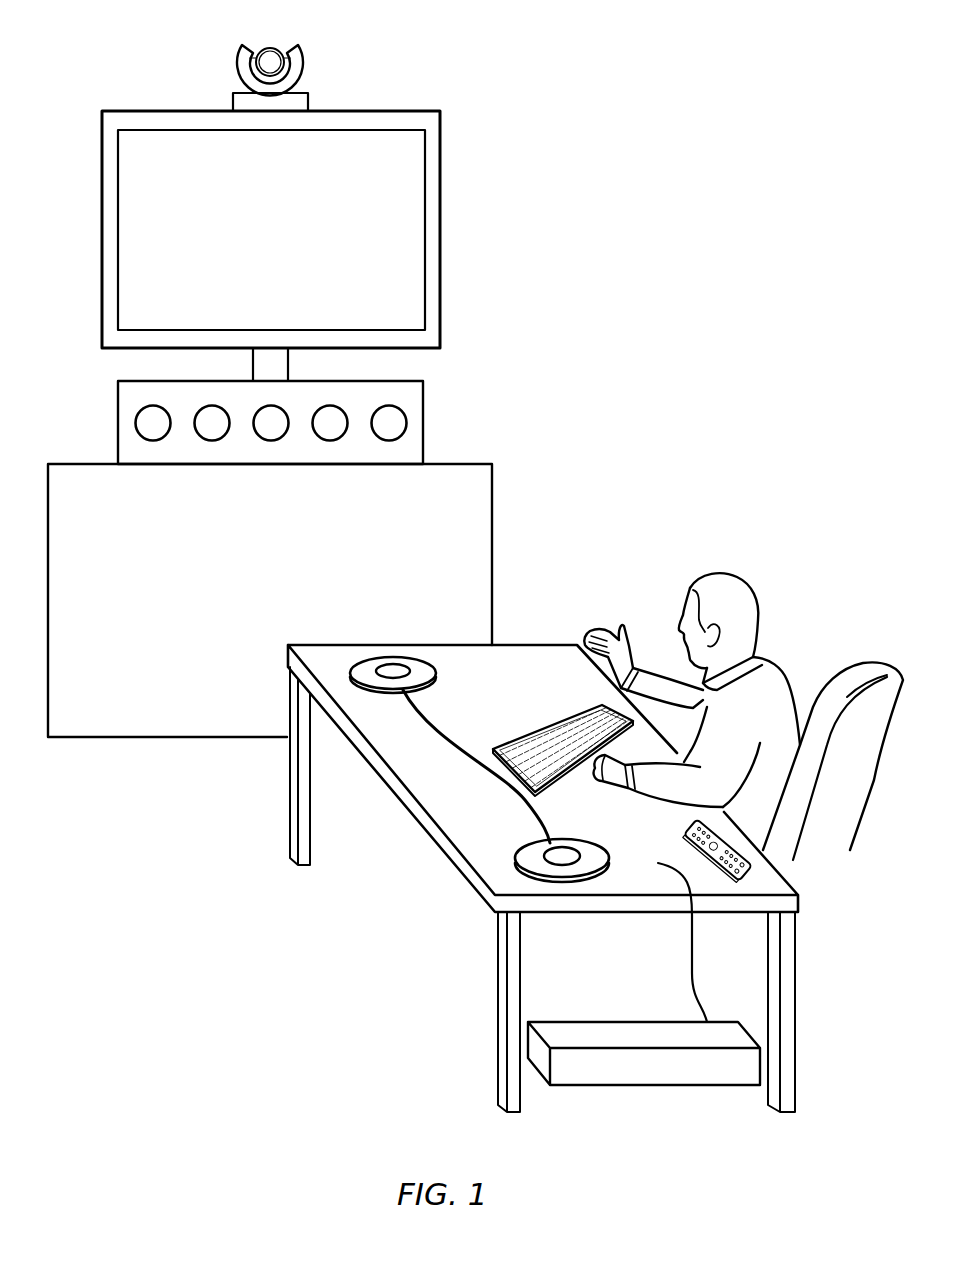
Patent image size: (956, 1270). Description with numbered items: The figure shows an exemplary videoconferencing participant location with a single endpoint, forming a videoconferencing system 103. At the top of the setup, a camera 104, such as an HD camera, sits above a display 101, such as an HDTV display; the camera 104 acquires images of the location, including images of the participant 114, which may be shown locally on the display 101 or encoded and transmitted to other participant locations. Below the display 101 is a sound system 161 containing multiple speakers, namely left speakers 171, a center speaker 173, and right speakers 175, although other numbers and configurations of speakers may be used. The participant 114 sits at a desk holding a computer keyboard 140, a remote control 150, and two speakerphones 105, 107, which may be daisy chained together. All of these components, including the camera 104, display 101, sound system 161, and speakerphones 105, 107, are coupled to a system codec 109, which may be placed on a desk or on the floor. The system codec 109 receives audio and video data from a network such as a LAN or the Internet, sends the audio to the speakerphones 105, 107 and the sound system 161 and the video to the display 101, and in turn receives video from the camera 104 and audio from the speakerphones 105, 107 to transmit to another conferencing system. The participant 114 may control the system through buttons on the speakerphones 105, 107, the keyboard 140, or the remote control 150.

The display 101 is at (271, 246).
The videoconferencing system 103 is at (566, 111).
The camera 104 is at (302, 60).
The speakerphone 105 is at (532, 842).
The speakerphone 107 is at (437, 672).
The system codec 109 is at (668, 1085).
The participant 114 is at (740, 590).
The computer keyboard 140 is at (552, 723).
The remote control 150 is at (683, 828).
The sound system 161 is at (423, 399).
The left speakers 171 is at (127, 440).
The center speaker 173 is at (244, 440).
The right speakers 175 is at (305, 440).